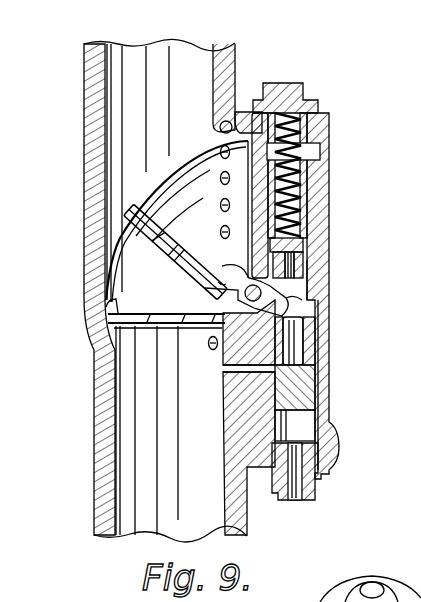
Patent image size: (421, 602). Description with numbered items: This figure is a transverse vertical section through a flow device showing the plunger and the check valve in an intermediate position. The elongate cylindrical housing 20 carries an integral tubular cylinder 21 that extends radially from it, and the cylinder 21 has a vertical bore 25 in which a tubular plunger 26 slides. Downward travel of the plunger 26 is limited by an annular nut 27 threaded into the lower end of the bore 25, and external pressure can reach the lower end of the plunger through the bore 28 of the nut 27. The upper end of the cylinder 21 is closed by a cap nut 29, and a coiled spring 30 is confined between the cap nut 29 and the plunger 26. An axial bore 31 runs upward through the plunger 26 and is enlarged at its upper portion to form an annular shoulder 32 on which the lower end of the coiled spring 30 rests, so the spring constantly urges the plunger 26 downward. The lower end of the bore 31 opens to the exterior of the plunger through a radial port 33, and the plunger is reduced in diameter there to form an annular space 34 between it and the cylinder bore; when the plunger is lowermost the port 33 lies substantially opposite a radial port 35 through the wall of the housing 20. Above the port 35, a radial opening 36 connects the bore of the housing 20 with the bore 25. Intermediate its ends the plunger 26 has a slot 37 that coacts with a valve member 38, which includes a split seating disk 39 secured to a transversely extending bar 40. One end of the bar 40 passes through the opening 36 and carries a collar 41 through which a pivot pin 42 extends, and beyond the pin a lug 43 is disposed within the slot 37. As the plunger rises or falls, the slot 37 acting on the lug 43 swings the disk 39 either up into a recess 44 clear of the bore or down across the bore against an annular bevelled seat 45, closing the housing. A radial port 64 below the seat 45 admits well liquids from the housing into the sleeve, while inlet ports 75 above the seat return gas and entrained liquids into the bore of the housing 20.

The housing 20 is at (88, 119).
The cylinder 21 is at (330, 186).
The bore 25 is at (322, 418).
The plunger 26 is at (328, 386).
The annular nut 27 is at (322, 478).
The bore of the nut 28 is at (305, 498).
The cap nut 29 is at (310, 94).
The coiled spring 30 is at (309, 151).
The axial bore 31 is at (303, 326).
The annular shoulder 32 is at (328, 245).
The radial port 33 is at (246, 367).
The annular space 34 is at (320, 352).
The radial port 35 is at (232, 391).
The radial opening 36 is at (209, 343).
The slot 37 is at (329, 283).
The valve member 38 is at (165, 240).
The split seating disk 39 is at (186, 260).
The bar 40 is at (178, 226).
The collar 41 is at (250, 280).
The pivot pin 42 is at (238, 292).
The lug 43 is at (292, 301).
The recess 44 is at (220, 128).
The annular bevelled seat 45 is at (112, 300).
The radial port 64 is at (208, 342).
The inlet ports 75 is at (220, 180).